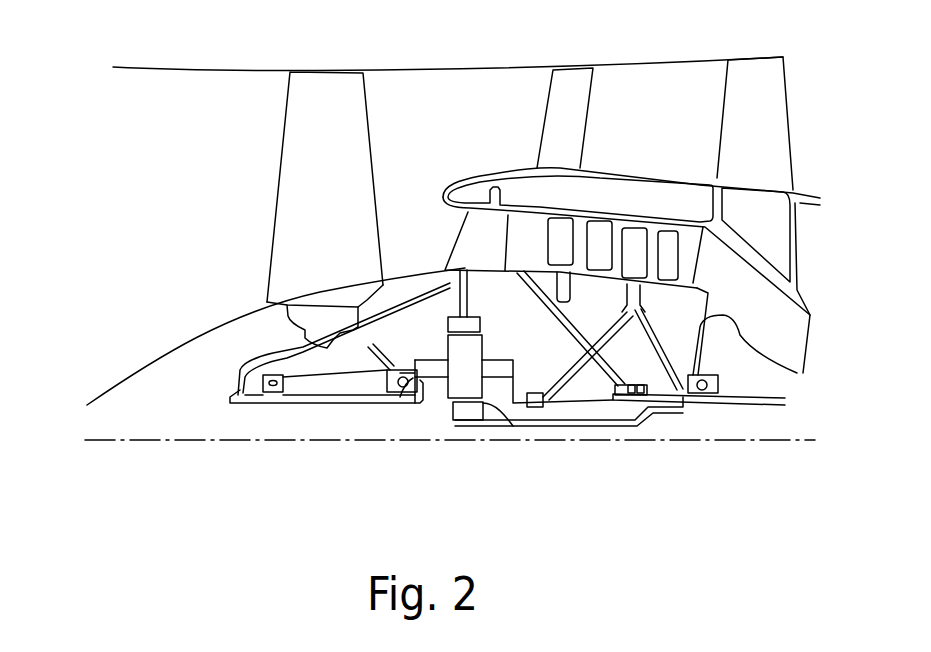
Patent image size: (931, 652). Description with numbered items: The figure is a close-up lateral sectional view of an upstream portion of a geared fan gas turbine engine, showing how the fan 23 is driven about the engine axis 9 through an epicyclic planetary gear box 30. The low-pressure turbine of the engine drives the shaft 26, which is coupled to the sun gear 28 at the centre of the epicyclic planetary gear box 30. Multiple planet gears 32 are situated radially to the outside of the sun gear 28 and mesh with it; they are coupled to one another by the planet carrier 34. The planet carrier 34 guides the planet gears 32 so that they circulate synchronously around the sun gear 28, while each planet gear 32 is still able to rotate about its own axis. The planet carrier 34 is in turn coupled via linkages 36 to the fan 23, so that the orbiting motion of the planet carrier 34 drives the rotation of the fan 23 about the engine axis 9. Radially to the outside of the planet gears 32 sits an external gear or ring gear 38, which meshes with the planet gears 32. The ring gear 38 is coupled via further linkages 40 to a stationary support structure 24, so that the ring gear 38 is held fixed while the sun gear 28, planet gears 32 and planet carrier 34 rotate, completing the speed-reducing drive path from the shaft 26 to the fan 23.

The engine axis 9 is at (258, 442).
The fan 23 is at (293, 189).
The stationary support structure 24 is at (473, 235).
The shaft 26 is at (602, 423).
The sun gear 28 is at (470, 412).
The epicyclic planetary gear box 30 is at (421, 418).
The planet gears 32 is at (445, 412).
The planet carrier 34 is at (502, 400).
The linkages 36 is at (417, 395).
The ring gear 38 is at (447, 327).
The linkages 40 is at (467, 303).